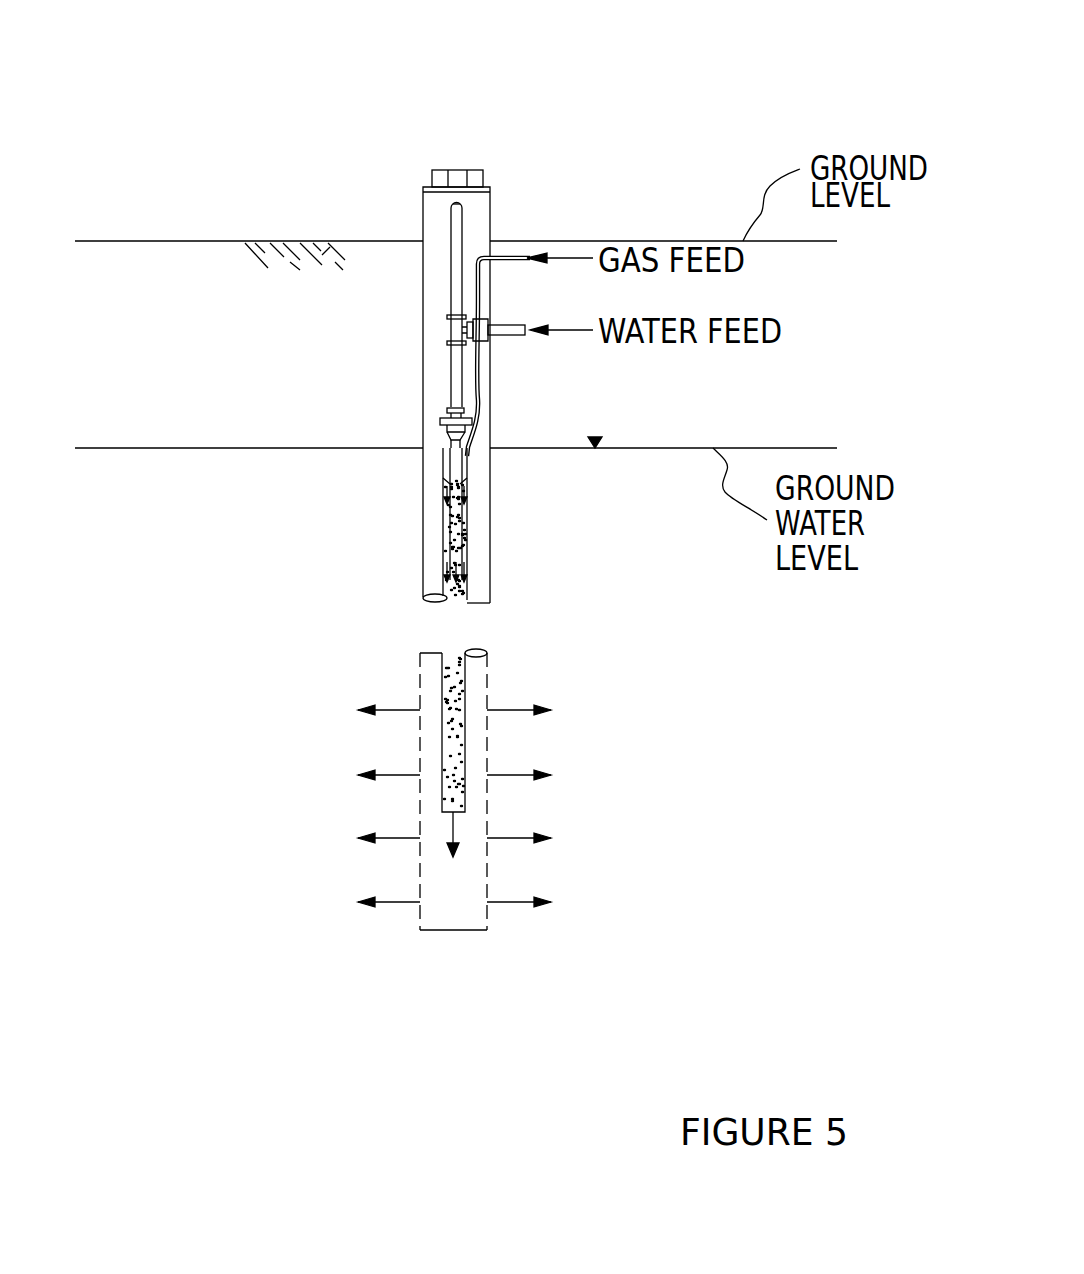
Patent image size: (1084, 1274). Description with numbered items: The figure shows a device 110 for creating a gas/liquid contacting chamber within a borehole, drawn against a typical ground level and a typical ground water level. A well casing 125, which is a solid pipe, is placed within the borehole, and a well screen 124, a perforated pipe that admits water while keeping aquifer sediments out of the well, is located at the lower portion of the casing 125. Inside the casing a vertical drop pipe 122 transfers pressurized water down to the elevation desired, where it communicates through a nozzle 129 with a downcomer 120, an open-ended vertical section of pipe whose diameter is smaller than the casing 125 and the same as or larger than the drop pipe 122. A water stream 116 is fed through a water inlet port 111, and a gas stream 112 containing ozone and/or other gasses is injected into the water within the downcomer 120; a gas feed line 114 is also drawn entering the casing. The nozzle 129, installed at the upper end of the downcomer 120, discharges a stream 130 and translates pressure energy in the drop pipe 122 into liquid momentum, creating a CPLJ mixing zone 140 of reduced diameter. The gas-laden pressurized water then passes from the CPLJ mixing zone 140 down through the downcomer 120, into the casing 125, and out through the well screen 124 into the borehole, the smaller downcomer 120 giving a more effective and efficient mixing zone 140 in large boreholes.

The device 110 is at (744, 129).
The water inlet port 111 is at (504, 339).
The gas stream 112 is at (569, 257).
The gas feed line 114 is at (507, 255).
The water stream 116 is at (567, 331).
The downcomer 120 is at (468, 530).
The drop pipe 122 is at (450, 362).
The well screen 124 is at (487, 685).
The well casing 125 is at (422, 573).
The nozzle 129 is at (441, 430).
The stream 130 is at (445, 459).
The CPLJ mixing zone 140 is at (450, 511).